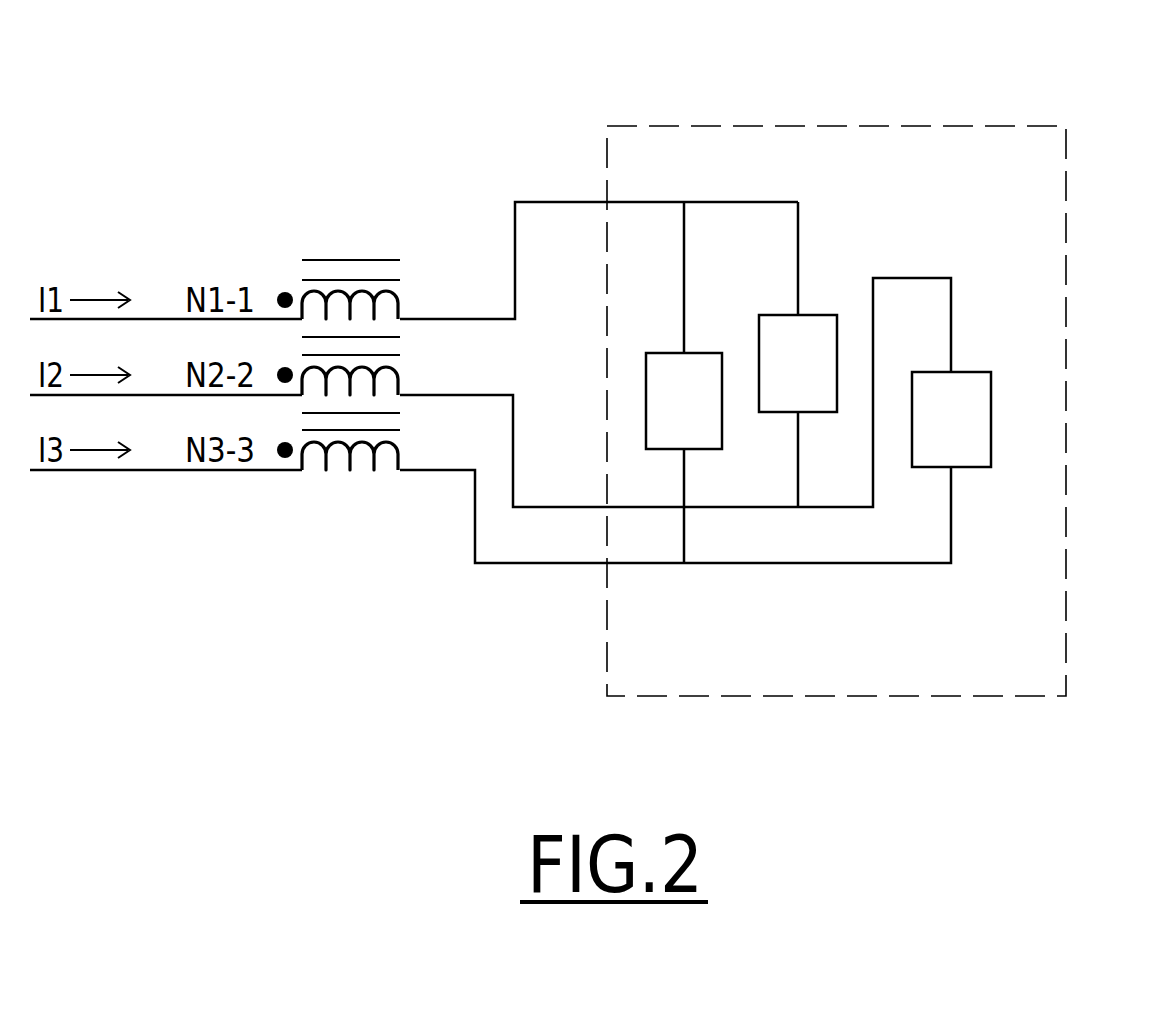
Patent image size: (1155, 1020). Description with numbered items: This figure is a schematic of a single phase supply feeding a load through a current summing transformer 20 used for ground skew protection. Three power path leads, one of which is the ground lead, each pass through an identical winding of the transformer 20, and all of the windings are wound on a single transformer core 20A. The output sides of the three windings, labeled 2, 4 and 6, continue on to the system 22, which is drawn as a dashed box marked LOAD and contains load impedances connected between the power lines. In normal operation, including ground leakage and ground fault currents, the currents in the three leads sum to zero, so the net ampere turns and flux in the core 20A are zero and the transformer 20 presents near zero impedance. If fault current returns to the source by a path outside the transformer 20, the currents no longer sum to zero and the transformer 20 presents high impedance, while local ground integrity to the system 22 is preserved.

The first output line 2 is at (599, 260).
The second output line 4 is at (675, 392).
The third output line 6 is at (675, 496).
The current summing transformer 20 is at (392, 315).
The transformer core 20A is at (386, 246).
The system 22 is at (877, 85).